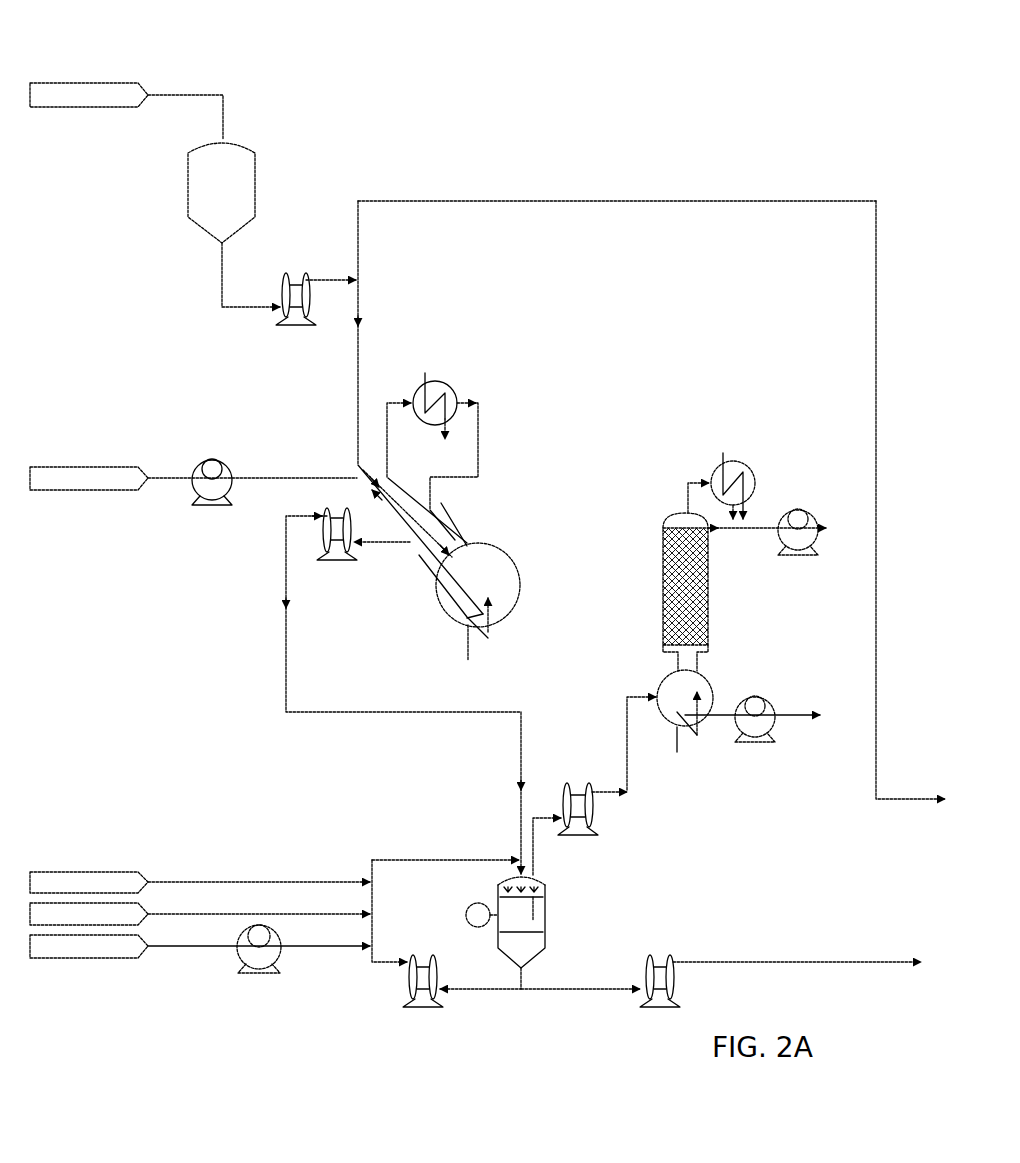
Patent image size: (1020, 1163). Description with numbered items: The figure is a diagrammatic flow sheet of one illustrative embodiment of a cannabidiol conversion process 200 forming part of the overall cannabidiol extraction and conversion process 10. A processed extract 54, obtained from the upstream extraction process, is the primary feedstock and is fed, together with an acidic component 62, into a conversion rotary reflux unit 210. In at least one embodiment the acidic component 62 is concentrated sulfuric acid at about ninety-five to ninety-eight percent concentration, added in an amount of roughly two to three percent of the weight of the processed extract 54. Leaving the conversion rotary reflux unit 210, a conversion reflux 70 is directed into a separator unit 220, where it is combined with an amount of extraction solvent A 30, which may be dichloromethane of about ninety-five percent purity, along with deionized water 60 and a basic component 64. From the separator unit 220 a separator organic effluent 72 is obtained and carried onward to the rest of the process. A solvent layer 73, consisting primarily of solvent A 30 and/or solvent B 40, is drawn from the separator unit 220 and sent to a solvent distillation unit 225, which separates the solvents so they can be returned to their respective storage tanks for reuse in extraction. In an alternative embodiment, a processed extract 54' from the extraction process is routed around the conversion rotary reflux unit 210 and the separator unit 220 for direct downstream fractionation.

The cannabidiol extraction and conversion process 10 is at (592, 98).
The processed extract 54 is at (194, 274).
The processed extract 54' is at (841, 495).
The acidic component 62 is at (193, 482).
The conversion rotary reflux unit 210 is at (525, 551).
The conversion reflux 70 is at (286, 665).
The solvent distillation unit 225 is at (724, 613).
The solvent B 40 is at (783, 532).
The solvent A 30 is at (441, 794).
The solvent layer 73 is at (538, 860).
The separator unit 220 is at (557, 926).
The separator organic effluent 72 is at (778, 962).
The deionized water 60 is at (200, 914).
The basic component 64 is at (200, 949).
The conversion process 200 is at (268, 1024).